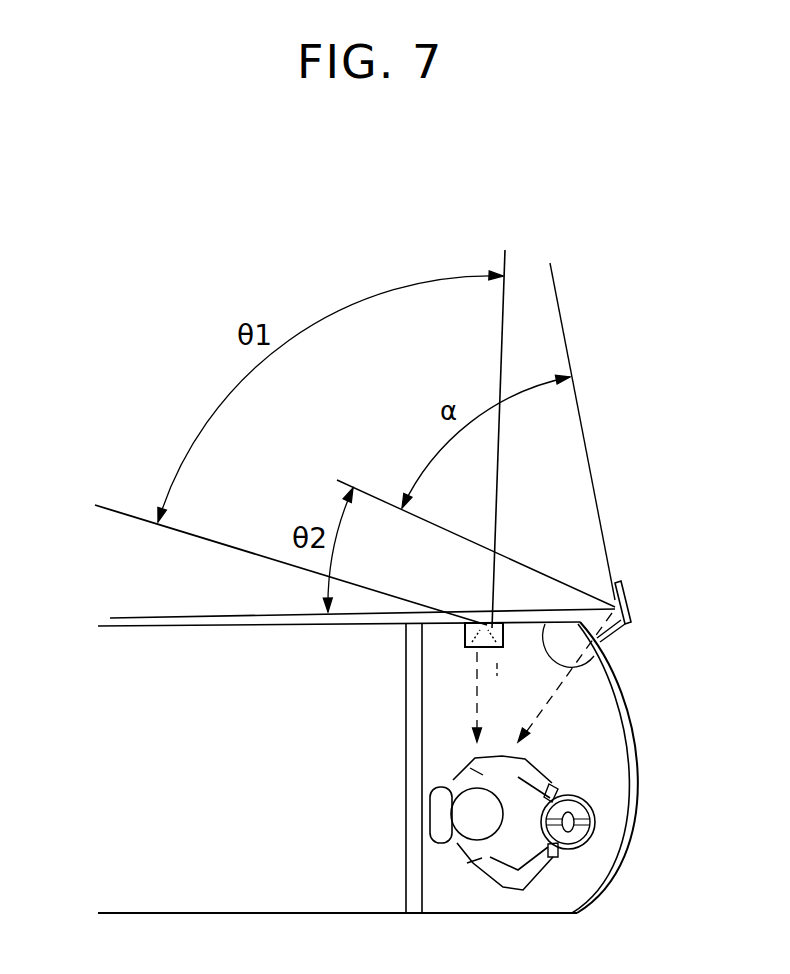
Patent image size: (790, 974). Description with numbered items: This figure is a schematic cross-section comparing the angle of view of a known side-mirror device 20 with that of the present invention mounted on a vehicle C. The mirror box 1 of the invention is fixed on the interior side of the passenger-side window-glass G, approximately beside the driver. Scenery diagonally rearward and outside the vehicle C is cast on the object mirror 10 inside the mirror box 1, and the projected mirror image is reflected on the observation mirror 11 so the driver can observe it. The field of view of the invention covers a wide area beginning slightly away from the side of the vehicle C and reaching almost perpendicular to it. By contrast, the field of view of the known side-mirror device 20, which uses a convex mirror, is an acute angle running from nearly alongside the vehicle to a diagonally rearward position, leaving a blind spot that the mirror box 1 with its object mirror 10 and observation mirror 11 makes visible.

The mirror box 1 is at (465, 632).
The object mirror 10 is at (497, 665).
The observation mirror 11 is at (470, 652).
The known side-mirror device 20 is at (623, 590).
The window-glass G is at (598, 640).
The vehicle C is at (632, 712).